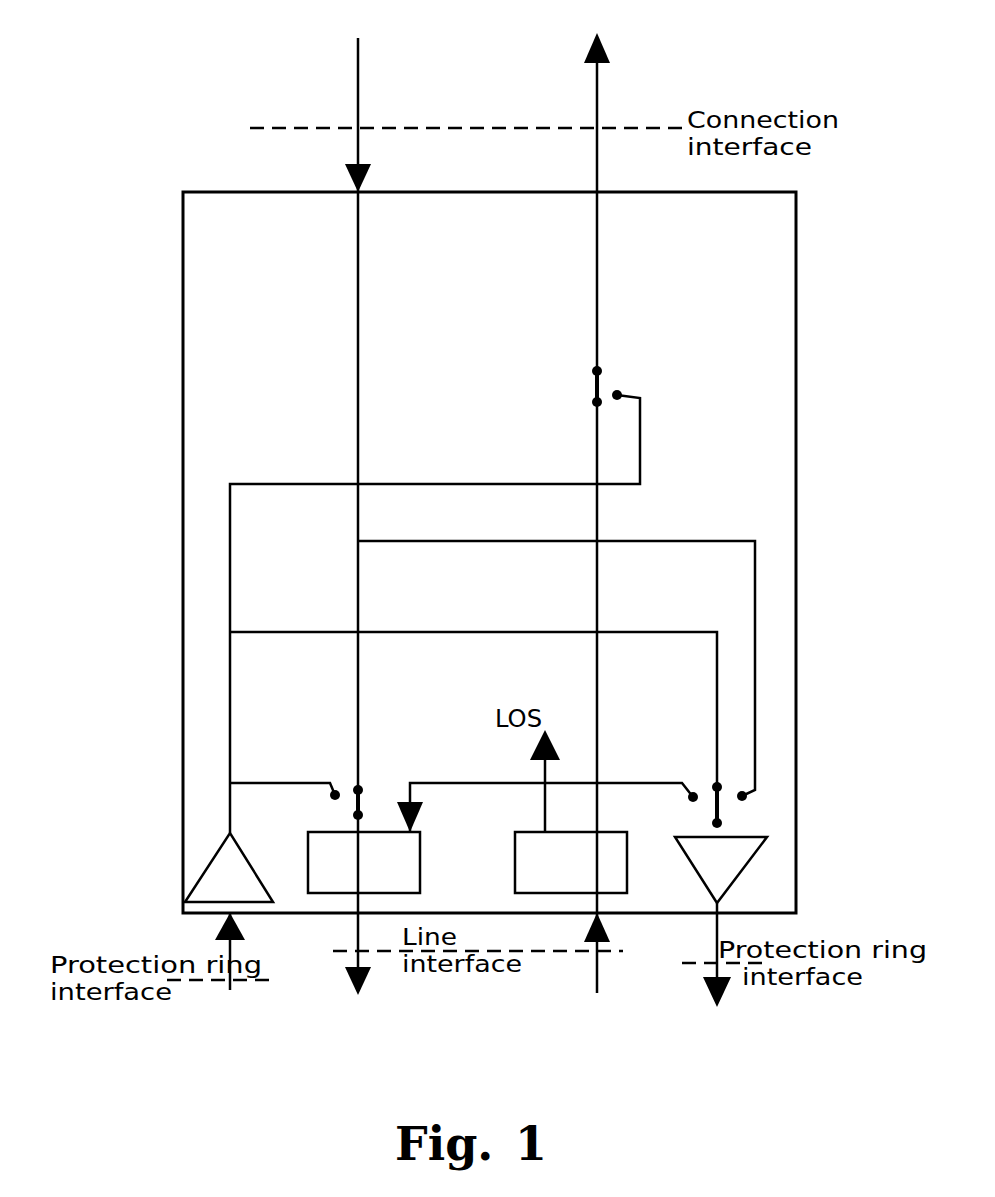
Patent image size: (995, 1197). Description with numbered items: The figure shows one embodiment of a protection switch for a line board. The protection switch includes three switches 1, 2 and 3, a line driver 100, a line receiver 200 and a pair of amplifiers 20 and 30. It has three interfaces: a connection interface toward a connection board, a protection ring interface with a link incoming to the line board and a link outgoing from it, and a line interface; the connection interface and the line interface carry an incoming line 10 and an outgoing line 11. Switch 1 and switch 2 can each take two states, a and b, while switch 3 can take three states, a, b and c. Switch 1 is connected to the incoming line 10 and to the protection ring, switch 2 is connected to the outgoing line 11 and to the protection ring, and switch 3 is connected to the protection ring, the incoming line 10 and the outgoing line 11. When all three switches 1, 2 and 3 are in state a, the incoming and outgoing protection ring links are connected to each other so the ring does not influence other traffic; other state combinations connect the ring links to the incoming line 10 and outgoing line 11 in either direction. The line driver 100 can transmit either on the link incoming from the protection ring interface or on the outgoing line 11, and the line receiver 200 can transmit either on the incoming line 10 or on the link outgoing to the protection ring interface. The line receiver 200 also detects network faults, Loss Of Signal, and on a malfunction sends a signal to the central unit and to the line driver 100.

The incoming line 10 is at (597, 120).
The outgoing line 11 is at (355, 108).
The switch 1 is at (588, 389).
The switch 2 is at (344, 778).
The switch 3 is at (716, 782).
The amplifier 20 is at (229, 911).
The amplifier 30 is at (721, 922).
The line driver 100 is at (364, 862).
The line receiver 200 is at (571, 862).